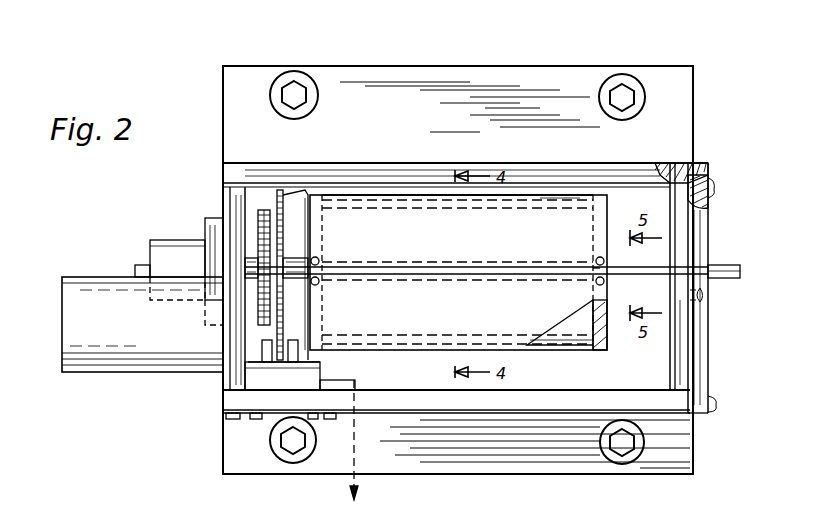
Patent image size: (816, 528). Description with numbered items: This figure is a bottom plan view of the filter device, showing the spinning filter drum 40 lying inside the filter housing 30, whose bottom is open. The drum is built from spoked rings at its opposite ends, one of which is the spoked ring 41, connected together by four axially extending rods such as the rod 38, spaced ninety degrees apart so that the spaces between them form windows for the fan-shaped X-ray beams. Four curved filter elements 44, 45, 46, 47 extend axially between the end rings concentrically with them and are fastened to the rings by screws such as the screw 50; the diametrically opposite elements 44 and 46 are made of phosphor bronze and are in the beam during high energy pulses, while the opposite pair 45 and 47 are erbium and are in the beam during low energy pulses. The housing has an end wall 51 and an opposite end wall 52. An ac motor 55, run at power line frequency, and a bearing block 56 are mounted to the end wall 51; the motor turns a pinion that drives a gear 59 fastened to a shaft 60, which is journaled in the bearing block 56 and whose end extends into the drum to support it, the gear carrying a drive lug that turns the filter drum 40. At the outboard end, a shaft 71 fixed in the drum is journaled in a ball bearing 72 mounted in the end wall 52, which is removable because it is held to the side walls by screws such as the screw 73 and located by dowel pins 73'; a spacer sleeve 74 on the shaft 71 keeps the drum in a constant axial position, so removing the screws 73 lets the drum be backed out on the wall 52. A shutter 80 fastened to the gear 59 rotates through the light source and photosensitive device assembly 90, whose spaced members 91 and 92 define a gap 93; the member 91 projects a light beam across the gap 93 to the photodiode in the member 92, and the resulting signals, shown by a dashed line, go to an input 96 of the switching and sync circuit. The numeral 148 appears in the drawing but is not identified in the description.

The filter housing 30 is at (625, 58).
The rod 38 is at (598, 350).
The filter drum 40 is at (360, 186).
The spoked ring 41 is at (306, 188).
The curved filter element 44 is at (418, 193).
The curved filter element 45 is at (562, 346).
The curved filter element 46 is at (420, 318).
The curved filter element 47 is at (548, 213).
The screw 50 is at (330, 268).
The end wall 51 is at (232, 191).
The end wall 52 is at (696, 232).
The ac motor 55 is at (108, 355).
The bearing block 56 is at (175, 242).
The gear 59 is at (258, 308).
The shaft 60 is at (137, 267).
The shaft 71 is at (728, 268).
The ball bearing 72 is at (704, 300).
The screw 73 is at (724, 281).
The dowel pin 73' is at (697, 147).
The spacer sleeve 74 is at (600, 262).
The shutter 80 is at (265, 205).
The light source and photosensitive device assembly 90 is at (262, 385).
The member 91 is at (258, 363).
The member 92 is at (296, 342).
The gap 93 is at (272, 345).
The input 96 is at (404, 441).
The fastener pins 148 is at (318, 258).